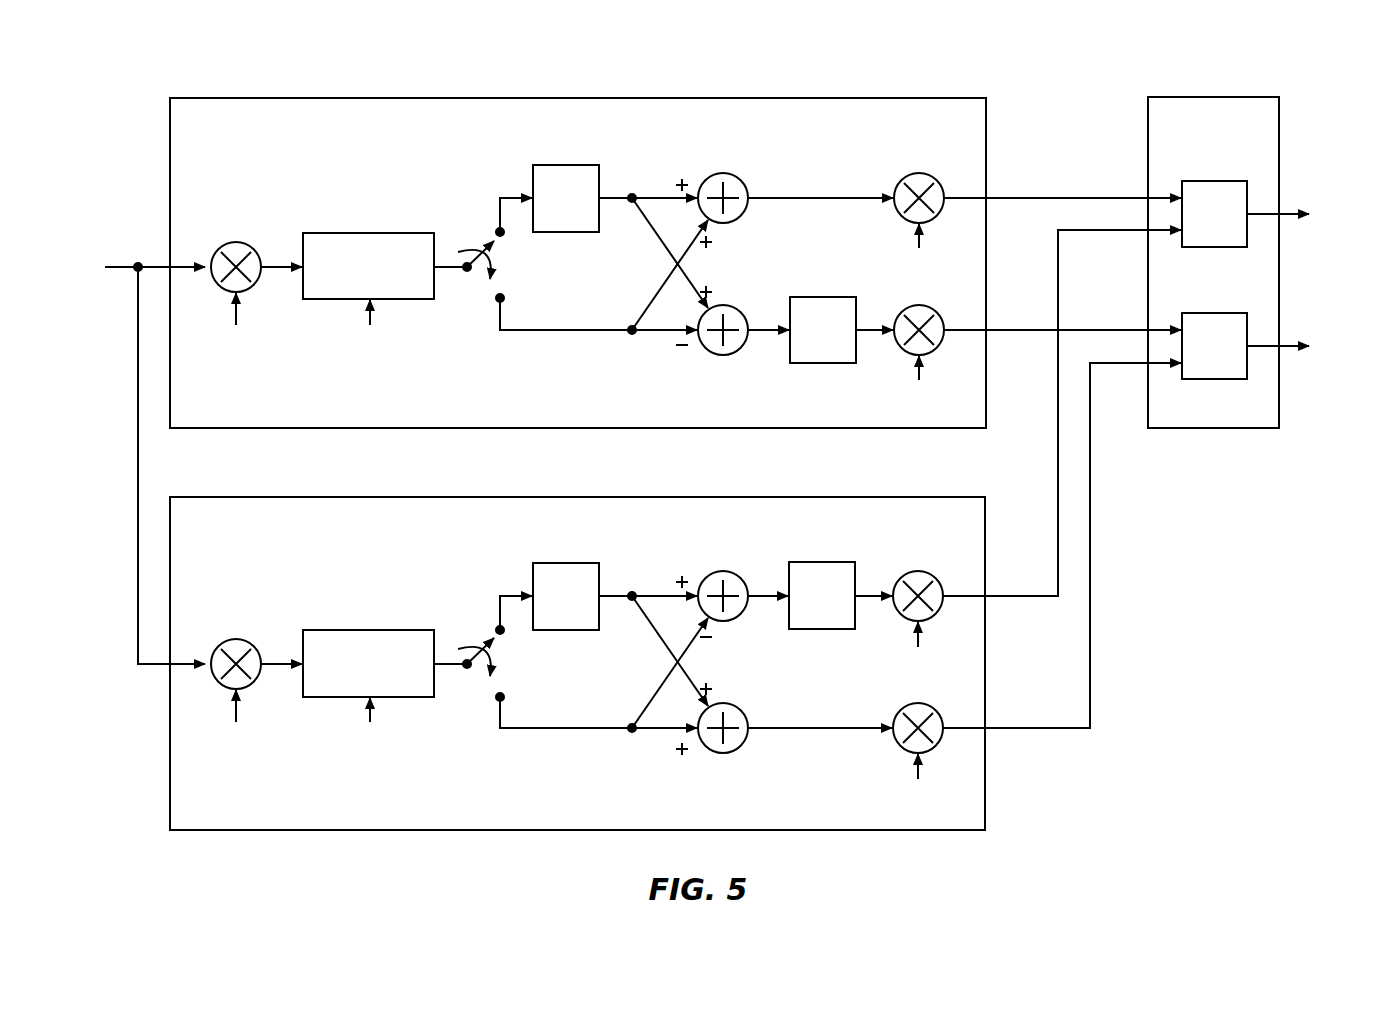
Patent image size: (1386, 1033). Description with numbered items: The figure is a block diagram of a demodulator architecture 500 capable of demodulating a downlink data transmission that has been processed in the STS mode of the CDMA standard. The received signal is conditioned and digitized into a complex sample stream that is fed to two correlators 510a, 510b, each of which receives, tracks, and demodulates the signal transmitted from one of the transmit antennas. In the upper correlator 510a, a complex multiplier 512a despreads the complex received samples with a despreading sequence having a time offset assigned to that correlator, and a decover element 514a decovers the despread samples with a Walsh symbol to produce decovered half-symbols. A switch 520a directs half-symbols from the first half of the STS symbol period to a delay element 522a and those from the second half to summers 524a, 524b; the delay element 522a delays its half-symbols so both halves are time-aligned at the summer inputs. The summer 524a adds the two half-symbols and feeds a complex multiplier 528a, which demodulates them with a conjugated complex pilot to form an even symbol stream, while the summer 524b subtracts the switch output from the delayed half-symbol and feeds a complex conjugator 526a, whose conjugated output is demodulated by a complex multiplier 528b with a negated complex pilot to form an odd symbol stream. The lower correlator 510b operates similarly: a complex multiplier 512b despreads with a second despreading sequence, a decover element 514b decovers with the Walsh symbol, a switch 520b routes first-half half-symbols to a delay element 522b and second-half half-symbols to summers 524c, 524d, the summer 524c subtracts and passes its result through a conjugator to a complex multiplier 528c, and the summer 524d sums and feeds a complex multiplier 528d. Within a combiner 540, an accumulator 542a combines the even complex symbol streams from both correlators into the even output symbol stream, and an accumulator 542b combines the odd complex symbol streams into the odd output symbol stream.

The demodulator architecture 500 is at (1290, 61).
The correlator 510a is at (575, 98).
The correlator 510b is at (575, 496).
The complex multiplier 512a is at (231, 242).
The complex multiplier 512b is at (231, 640).
The decover element 514a is at (364, 233).
The decover element 514b is at (364, 630).
The switch 520a is at (460, 250).
The switch 520b is at (460, 645).
The delay element 522a is at (564, 164).
The delay element 522b is at (564, 562).
The summer 524a is at (718, 173).
The summer 524b is at (718, 356).
The summer 524c is at (718, 571).
The summer 524d is at (718, 754).
The complex conjugator 526a is at (819, 297).
The complex multiplier 528a is at (915, 173).
The complex multiplier 528b is at (938, 311).
The complex multiplier 528c is at (915, 571).
The complex multiplier 528d is at (936, 711).
The combiner 540 is at (1210, 97).
The accumulator 542a is at (1211, 181).
The accumulator 542b is at (1211, 313).